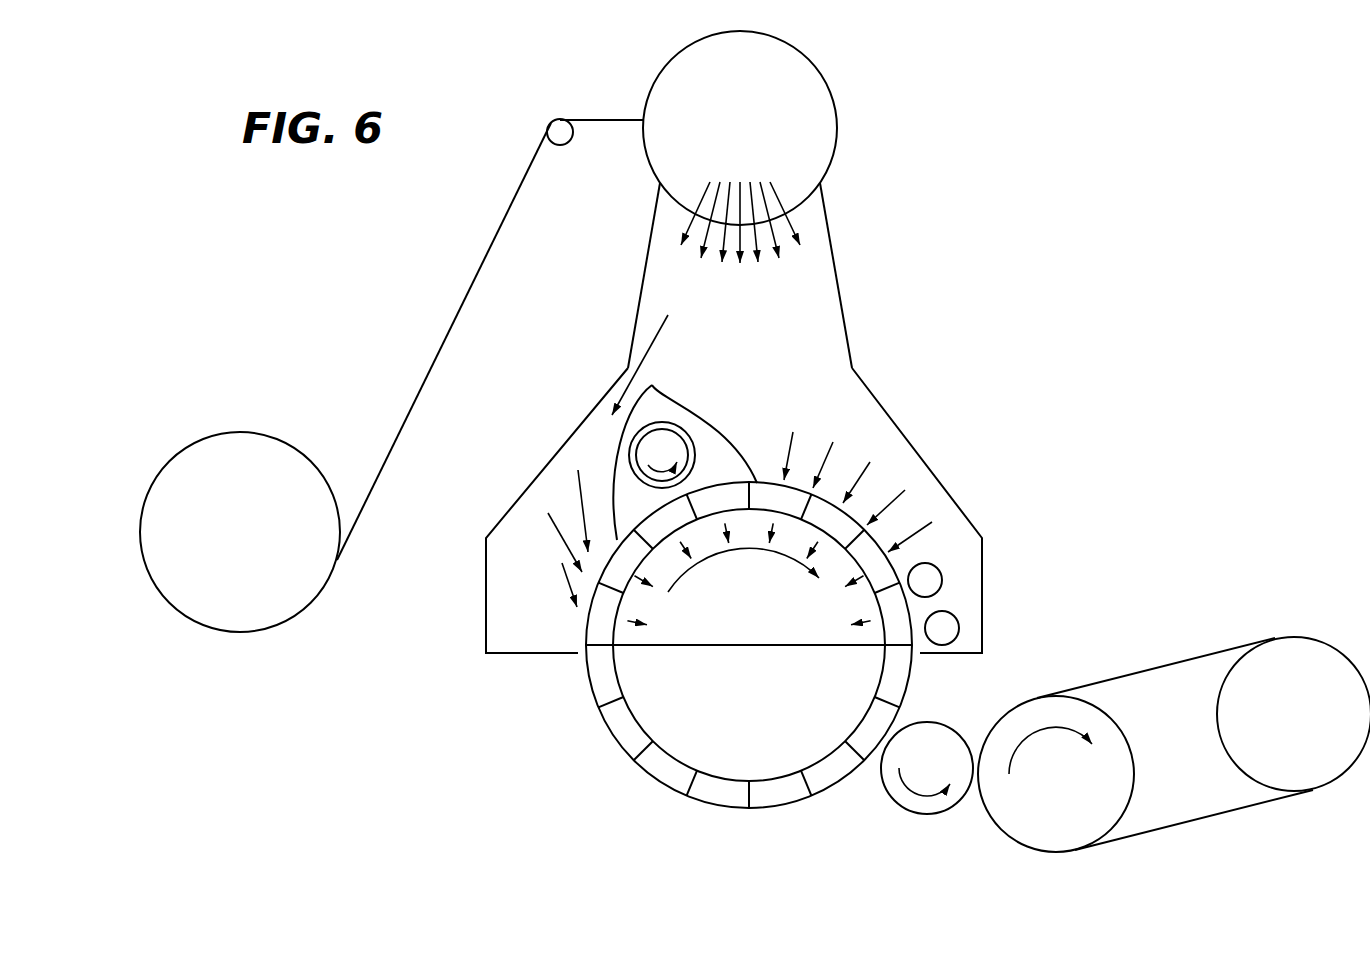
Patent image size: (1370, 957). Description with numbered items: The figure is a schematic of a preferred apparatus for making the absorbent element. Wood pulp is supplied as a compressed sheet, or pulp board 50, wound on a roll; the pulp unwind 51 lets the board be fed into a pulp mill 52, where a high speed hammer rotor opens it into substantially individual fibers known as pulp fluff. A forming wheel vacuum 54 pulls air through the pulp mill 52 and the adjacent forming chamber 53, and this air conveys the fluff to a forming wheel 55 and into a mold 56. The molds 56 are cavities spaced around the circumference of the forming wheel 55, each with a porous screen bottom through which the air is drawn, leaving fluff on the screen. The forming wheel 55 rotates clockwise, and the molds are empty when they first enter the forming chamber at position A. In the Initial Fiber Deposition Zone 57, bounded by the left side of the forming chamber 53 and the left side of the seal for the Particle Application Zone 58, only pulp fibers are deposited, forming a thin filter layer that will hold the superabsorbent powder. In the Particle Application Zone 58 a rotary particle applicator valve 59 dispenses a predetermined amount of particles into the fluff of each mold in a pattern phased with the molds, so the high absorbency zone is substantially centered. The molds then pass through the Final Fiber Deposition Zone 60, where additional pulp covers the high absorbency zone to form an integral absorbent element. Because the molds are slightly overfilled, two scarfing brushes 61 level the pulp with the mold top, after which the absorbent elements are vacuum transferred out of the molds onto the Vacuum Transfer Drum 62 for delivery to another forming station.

The pulp board 50 is at (477, 272).
The pulp unwind 51 is at (188, 442).
The pulp mill 52 is at (697, 92).
The forming chamber 53 is at (790, 287).
The forming wheel vacuum 54 is at (732, 619).
The forming wheel 55 is at (823, 790).
The mold 56 is at (603, 723).
The Initial Fiber Deposition Zone 57 is at (493, 574).
The Particle Application Zone 58 is at (672, 405).
The rotary particle applicator valve 59 is at (640, 453).
The Final Fiber Deposition Zone 60 is at (860, 482).
The scarfing brushes 61 is at (947, 600).
The Vacuum Transfer Drum 62 is at (957, 727).
The position A is at (532, 640).